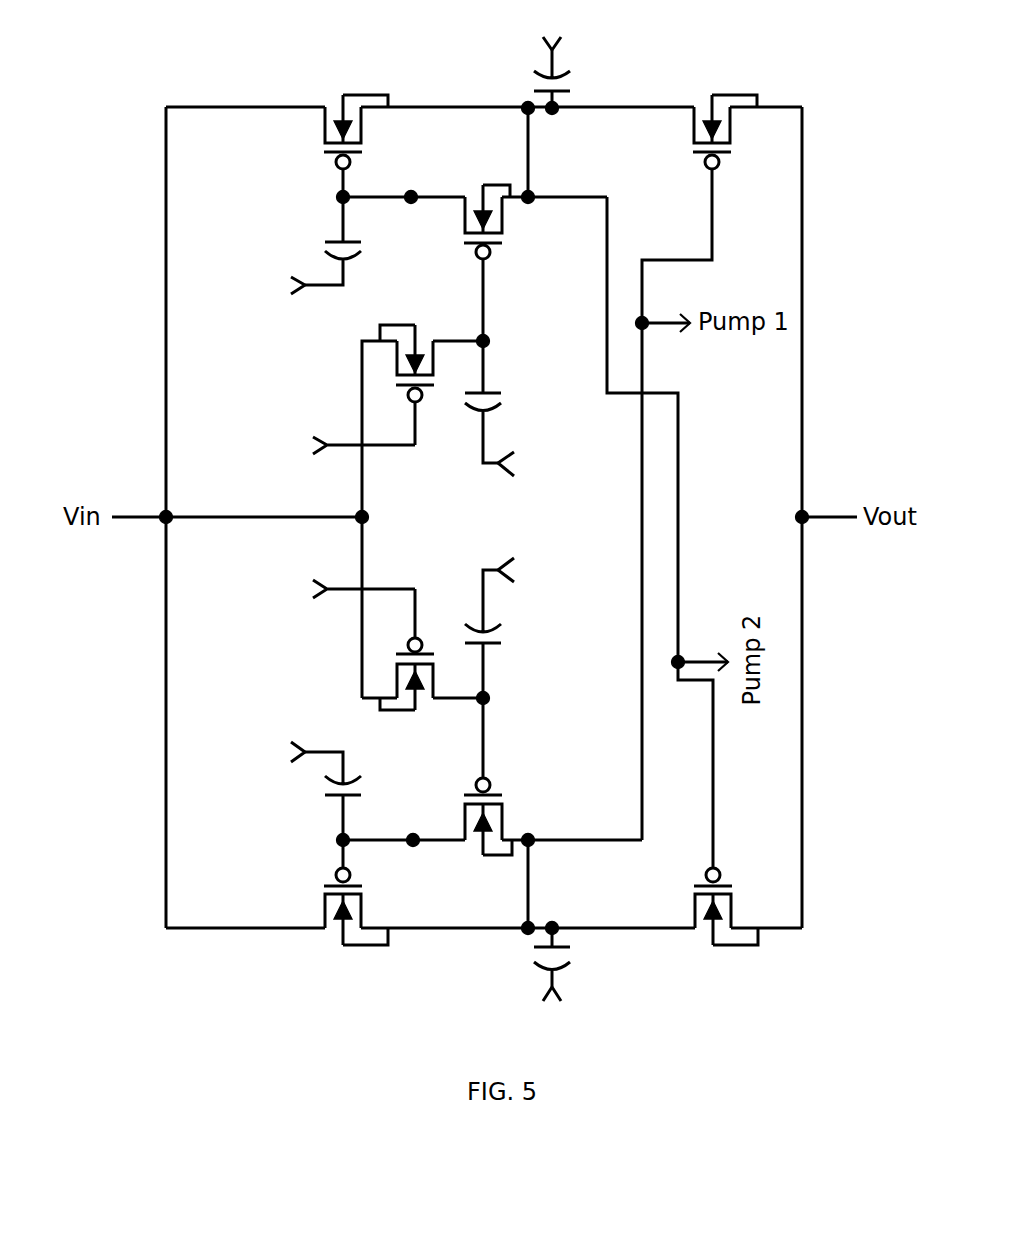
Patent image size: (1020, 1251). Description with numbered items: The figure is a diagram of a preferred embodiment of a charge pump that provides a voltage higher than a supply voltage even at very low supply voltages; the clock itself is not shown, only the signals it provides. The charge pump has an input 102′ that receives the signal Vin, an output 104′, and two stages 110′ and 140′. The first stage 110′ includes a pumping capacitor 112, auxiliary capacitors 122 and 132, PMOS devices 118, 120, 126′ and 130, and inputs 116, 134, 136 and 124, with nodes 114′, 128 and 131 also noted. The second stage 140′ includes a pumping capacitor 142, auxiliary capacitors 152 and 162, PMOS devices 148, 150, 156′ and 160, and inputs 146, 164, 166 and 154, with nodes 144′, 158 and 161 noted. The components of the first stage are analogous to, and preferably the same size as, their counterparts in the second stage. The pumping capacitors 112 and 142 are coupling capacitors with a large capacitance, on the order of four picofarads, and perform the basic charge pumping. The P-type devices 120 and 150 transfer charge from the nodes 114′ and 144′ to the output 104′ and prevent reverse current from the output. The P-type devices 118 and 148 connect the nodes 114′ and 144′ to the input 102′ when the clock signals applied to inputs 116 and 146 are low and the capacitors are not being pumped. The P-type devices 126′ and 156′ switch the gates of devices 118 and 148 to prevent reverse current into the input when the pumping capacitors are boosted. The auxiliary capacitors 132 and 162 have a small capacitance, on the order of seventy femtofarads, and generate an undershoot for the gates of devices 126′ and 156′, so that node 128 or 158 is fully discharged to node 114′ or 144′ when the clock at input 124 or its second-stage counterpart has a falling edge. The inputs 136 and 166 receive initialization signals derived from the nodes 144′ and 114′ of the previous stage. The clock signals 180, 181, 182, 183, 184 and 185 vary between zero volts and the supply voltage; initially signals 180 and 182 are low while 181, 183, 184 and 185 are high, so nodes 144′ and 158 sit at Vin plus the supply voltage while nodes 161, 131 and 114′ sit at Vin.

The stage 140′ is at (128, 160).
The stage 110′ is at (128, 770).
The PMOS device 148 is at (292, 123).
The PMOS device 150 is at (655, 133).
The PMOS device 156′ is at (530, 217).
The PMOS device 160 is at (415, 300).
The PMOS device 130 is at (416, 745).
The PMOS device 126′ is at (530, 820).
The PMOS device 118 is at (295, 917).
The PMOS device 120 is at (672, 910).
The input 146 is at (545, 48).
The auxiliary capacitor 152 is at (300, 253).
The auxiliary capacitor 162 is at (530, 403).
The auxiliary capacitor 132 is at (530, 640).
The auxiliary capacitor 122 is at (300, 787).
The input 116 is at (545, 993).
The pumping capacitor 142 is at (605, 90).
The node 144′ is at (523, 120).
The node 158 is at (413, 193).
The node 161 is at (490, 339).
The node 131 is at (490, 699).
The node 128 is at (414, 845).
The node 114′ is at (527, 920).
The pumping capacitor 112 is at (605, 948).
The input 102′ is at (155, 522).
The output 104′ is at (815, 523).
The input 154 is at (295, 290).
The input 164 is at (505, 468).
The input 134 is at (508, 565).
The input 124 is at (298, 742).
The input 166 is at (325, 442).
The input 136 is at (325, 595).
The clock signal 183 is at (550, 28).
The clock signal 185 is at (238, 296).
The clock signal 184 is at (570, 465).
The clock signal 181 is at (570, 564).
The clock signal 182 is at (235, 743).
The clock signal 180 is at (552, 1015).